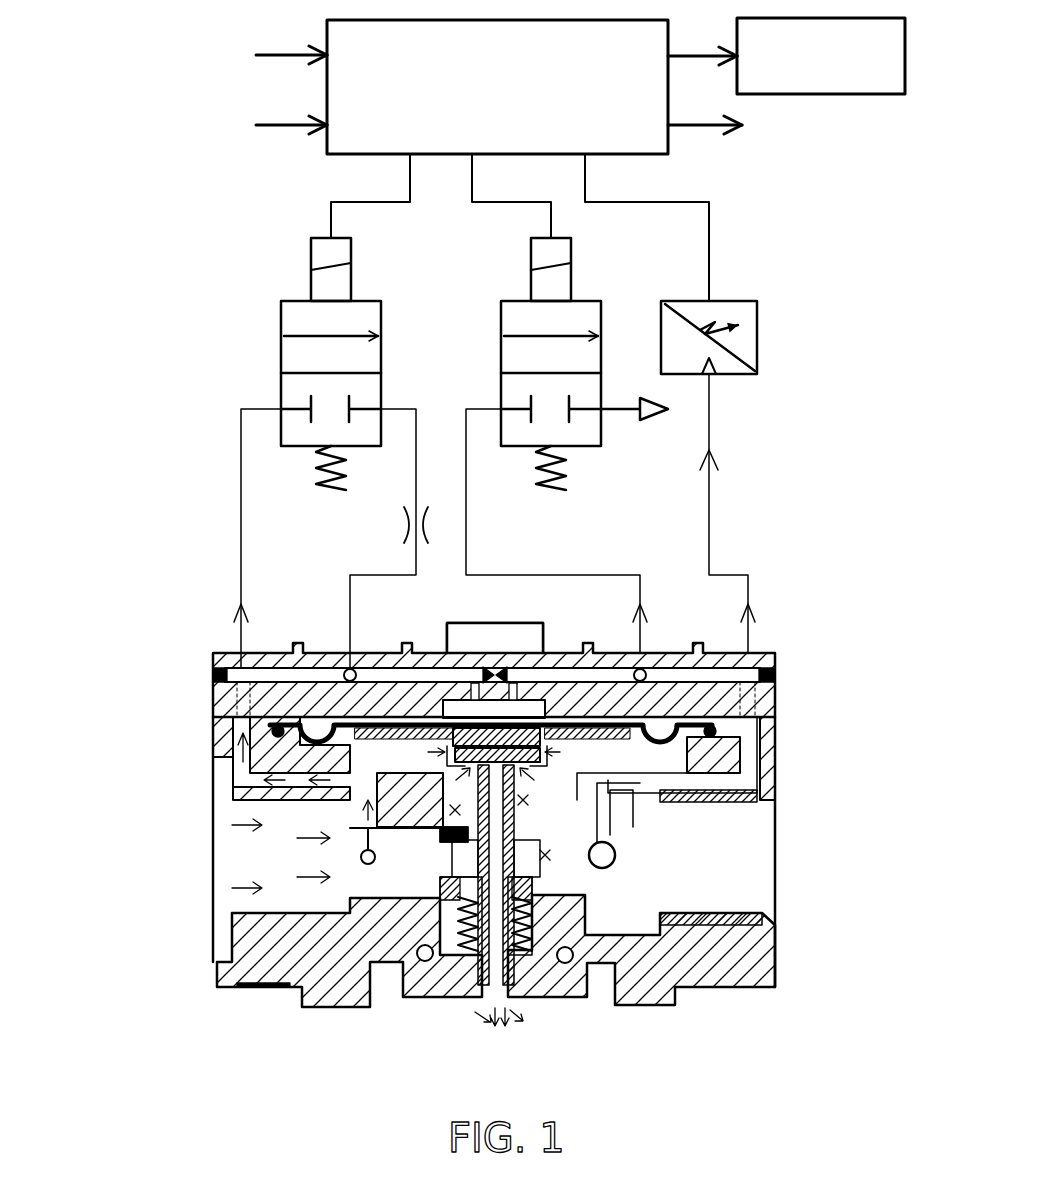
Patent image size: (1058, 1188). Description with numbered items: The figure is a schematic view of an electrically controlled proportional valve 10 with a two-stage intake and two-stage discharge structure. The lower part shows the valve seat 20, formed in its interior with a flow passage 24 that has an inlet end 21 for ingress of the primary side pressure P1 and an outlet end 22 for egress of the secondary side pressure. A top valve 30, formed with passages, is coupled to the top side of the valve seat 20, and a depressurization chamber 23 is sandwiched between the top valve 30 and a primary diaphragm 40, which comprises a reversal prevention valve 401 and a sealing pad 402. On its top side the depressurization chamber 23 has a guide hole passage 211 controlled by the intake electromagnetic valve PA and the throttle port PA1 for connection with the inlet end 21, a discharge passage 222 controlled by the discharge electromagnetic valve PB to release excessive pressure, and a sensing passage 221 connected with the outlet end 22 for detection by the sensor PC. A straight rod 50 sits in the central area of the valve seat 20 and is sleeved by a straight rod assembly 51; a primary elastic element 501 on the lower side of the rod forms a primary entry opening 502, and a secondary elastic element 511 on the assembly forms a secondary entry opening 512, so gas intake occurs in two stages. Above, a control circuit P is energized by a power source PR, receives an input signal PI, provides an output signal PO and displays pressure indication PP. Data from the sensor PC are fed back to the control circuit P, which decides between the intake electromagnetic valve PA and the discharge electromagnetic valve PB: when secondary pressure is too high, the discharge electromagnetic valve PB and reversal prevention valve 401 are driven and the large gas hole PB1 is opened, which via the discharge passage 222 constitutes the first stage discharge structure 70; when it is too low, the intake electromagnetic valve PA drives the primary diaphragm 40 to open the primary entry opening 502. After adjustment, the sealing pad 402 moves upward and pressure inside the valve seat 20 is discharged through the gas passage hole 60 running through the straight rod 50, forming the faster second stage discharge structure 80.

The electrically controlled proportional valve 10 is at (777, 990).
The valve seat 20 is at (726, 988).
The inlet end 21 is at (213, 814).
The outlet end 22 is at (772, 820).
The depressurization chamber 23 is at (455, 697).
The flow passage 24 is at (748, 824).
The top valve 30 is at (775, 655).
The primary diaphragm 40 is at (303, 718).
The straight rod 50 is at (615, 858).
The straight rod assembly 51 is at (458, 856).
The gas passage hole 60 is at (492, 997).
The first stage discharge structure 70 is at (543, 700).
The second stage discharge structure 80 is at (545, 925).
The guide hole passage 211 is at (238, 633).
The sensing passage 221 is at (752, 633).
The discharge passage 222 is at (637, 633).
The reversal prevention valve 401 is at (545, 742).
The sealing pad 402 is at (560, 765).
The primary elastic element 501 is at (450, 955).
The primary entry opening 502 is at (440, 838).
The secondary elastic element 511 is at (590, 925).
The secondary entry opening 512 is at (575, 800).
The control circuit P is at (497, 87).
The primary side pressure P1 is at (250, 883).
The intake electromagnetic valve PA is at (281, 360).
The throttle port PA1 is at (404, 524).
The discharge electromagnetic valve PB is at (501, 360).
The large gas hole PB1 is at (668, 410).
The sensor PC is at (758, 358).
The power source PR is at (187, 56).
The input signal PI is at (196, 126).
The pressure indication PP is at (786, 56).
The output signal PO is at (810, 126).